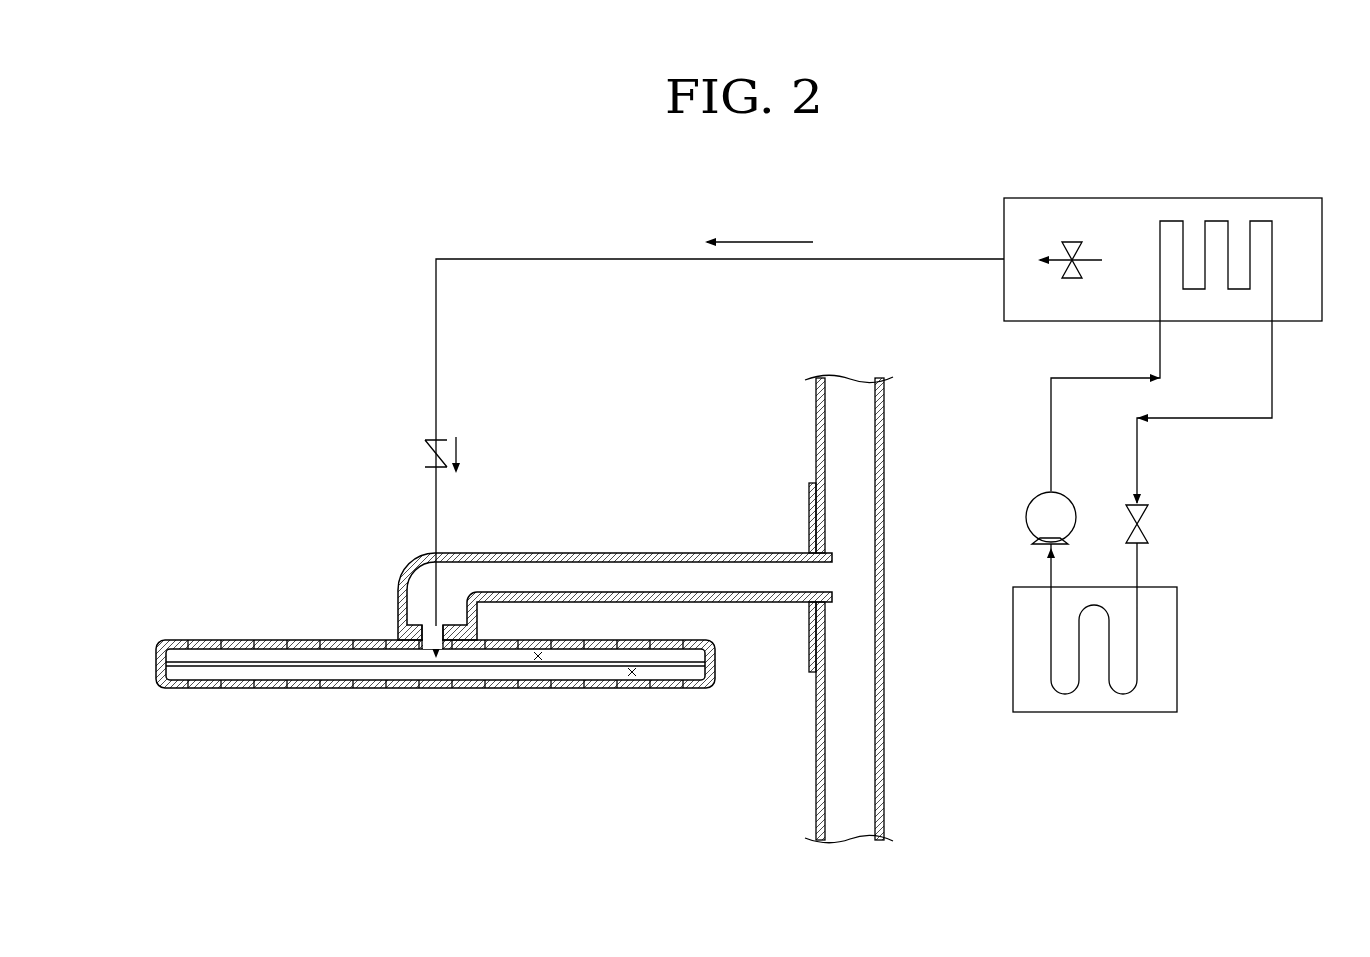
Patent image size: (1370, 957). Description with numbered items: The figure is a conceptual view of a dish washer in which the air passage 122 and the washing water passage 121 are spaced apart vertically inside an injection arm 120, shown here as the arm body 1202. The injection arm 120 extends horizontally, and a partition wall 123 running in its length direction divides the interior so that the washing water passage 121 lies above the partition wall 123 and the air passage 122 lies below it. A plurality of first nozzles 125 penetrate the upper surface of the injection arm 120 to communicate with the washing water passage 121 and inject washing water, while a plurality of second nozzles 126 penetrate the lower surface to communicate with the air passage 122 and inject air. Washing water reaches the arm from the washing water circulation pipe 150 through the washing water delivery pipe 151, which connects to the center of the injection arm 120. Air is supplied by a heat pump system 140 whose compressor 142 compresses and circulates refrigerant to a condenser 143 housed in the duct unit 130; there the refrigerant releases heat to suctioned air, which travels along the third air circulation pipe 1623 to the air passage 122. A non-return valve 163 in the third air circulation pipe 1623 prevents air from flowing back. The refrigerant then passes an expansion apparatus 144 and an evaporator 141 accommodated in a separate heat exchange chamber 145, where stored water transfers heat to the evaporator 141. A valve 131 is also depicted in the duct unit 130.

The injection arm 120 is at (435, 663).
The plate body 1202 is at (270, 632).
The washing water passage 121 is at (538, 660).
The air passage 122 is at (632, 676).
The partition wall 123 is at (285, 667).
The first nozzles 125 is at (190, 639).
The second nozzles 126 is at (190, 689).
The duct unit 130 is at (1163, 197).
The expansion valve 131 is at (1072, 240).
The heat pump system 140 is at (1275, 432).
The evaporator 141 is at (1138, 655).
The compressor 142 is at (1026, 517).
The condenser 143 is at (1215, 220).
The expansion apparatus 144 is at (1150, 528).
The heat exchange chamber 145 is at (1178, 612).
The washing water circulation pipe 150 is at (886, 612).
The washing water delivery pipe 151 is at (636, 552).
The non-return valve 163 is at (425, 445).
The third air circulation pipe 1623 is at (436, 512).